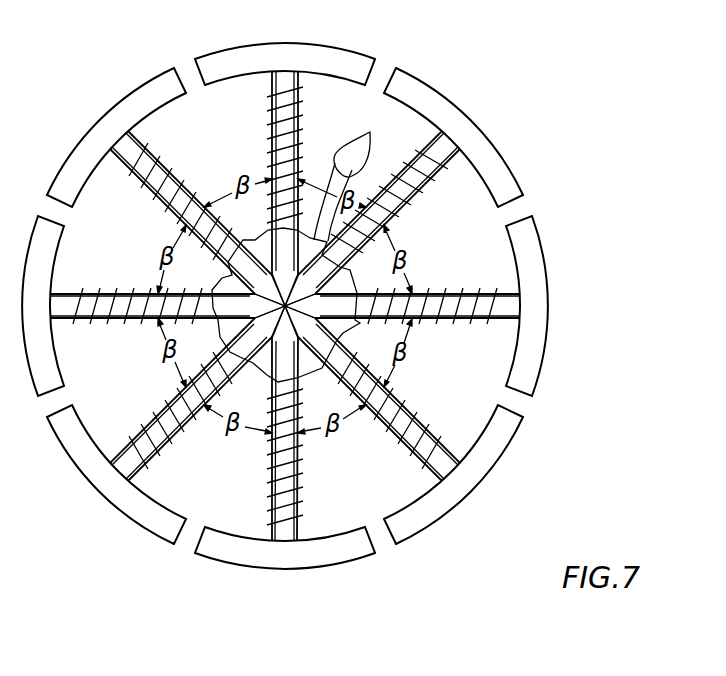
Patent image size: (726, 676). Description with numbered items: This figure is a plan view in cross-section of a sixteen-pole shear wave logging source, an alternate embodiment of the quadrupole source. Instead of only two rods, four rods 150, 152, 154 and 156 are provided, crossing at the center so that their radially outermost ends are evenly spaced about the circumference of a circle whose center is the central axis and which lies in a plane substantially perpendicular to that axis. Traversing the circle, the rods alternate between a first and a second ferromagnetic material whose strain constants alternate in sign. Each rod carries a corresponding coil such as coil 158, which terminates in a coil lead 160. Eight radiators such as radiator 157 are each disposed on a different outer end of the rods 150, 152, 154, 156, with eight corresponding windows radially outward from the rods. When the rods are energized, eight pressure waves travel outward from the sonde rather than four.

The rod 150 is at (146, 468).
The rod 152 is at (299, 489).
The rod 154 is at (416, 418).
The rod 156 is at (486, 289).
The radiator 157 is at (146, 530).
The coil 158 is at (404, 203).
The coil lead 160 is at (370, 132).